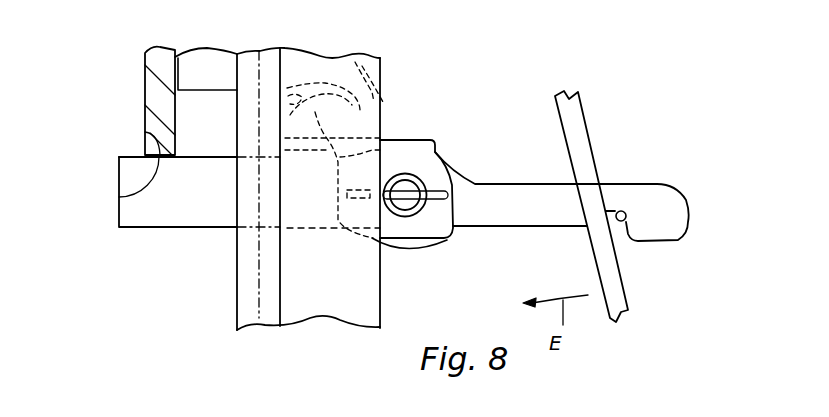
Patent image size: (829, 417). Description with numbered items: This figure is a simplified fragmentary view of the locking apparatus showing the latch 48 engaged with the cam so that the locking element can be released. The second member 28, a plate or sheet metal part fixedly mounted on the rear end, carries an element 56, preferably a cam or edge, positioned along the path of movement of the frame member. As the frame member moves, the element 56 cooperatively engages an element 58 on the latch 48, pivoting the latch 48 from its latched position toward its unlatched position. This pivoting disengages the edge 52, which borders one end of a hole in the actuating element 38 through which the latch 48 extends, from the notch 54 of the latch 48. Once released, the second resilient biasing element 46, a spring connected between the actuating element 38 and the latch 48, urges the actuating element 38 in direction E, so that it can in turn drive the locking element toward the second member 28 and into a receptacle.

The second member 28 is at (145, 52).
The element on latch 58 is at (147, 130).
The element 56 is at (119, 199).
The second resilient biasing element 46 is at (350, 78).
The edge 52 is at (601, 213).
The notch 54 is at (628, 222).
The latch 48 is at (690, 232).
The actuating element 38 is at (628, 303).